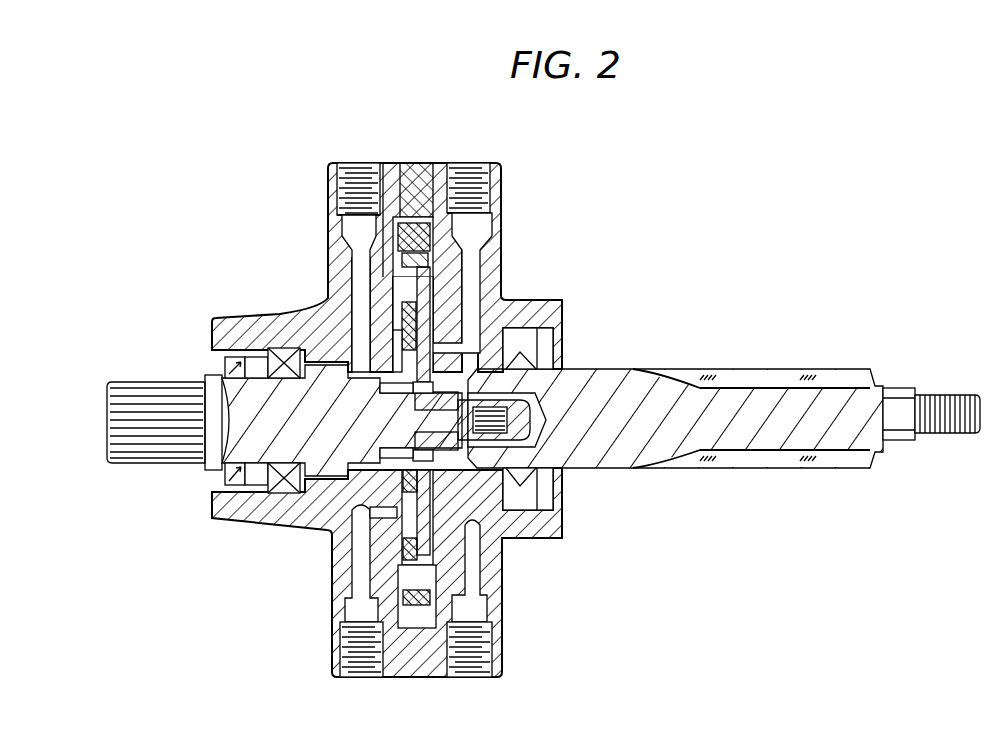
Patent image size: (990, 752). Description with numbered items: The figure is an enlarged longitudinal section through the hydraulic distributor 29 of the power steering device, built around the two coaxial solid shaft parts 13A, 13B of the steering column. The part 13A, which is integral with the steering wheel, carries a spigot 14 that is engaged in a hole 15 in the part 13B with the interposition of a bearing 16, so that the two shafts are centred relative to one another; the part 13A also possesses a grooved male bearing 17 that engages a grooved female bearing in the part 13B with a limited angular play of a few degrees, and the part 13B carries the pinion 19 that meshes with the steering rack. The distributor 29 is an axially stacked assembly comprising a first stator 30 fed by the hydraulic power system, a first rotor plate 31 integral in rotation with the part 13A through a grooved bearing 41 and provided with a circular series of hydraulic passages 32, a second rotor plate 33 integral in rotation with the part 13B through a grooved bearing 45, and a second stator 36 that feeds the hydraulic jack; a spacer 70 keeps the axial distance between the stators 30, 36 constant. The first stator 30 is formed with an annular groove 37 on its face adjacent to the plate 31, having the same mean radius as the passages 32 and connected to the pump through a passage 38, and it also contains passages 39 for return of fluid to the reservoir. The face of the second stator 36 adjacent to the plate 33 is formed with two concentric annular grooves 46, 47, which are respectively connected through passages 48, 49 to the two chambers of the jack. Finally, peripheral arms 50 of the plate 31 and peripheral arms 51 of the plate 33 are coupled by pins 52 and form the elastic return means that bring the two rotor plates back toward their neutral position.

The distributor 29 is at (505, 163).
The first stator 30 is at (385, 164).
The spacer 70 is at (413, 163).
The second stator 36 is at (440, 163).
The passage 49 is at (477, 164).
The peripheral arms 50 is at (365, 208).
The peripheral arms 51 is at (447, 220).
The pins 52 is at (400, 240).
The passages 39 is at (362, 258).
The first rotor plate 31 is at (398, 314).
The second rotor plate 33 is at (433, 297).
The annular groove 47 is at (492, 313).
The part of the steering column 13A is at (199, 373).
The spigot 14 is at (562, 364).
The hole 15 is at (507, 417).
The part of the steering column 13B is at (640, 368).
The pinion 19 is at (858, 370).
The bearing 16 is at (560, 477).
The grooved male bearing 17 is at (450, 447).
The grooved bearing 45 is at (430, 460).
The grooved bearing 41 is at (395, 470).
The annular groove 37 is at (395, 512).
The hydraulic passages 32 is at (400, 528).
The passage 38 is at (358, 573).
The annular groove 46 is at (440, 538).
The passage 48 is at (477, 668).